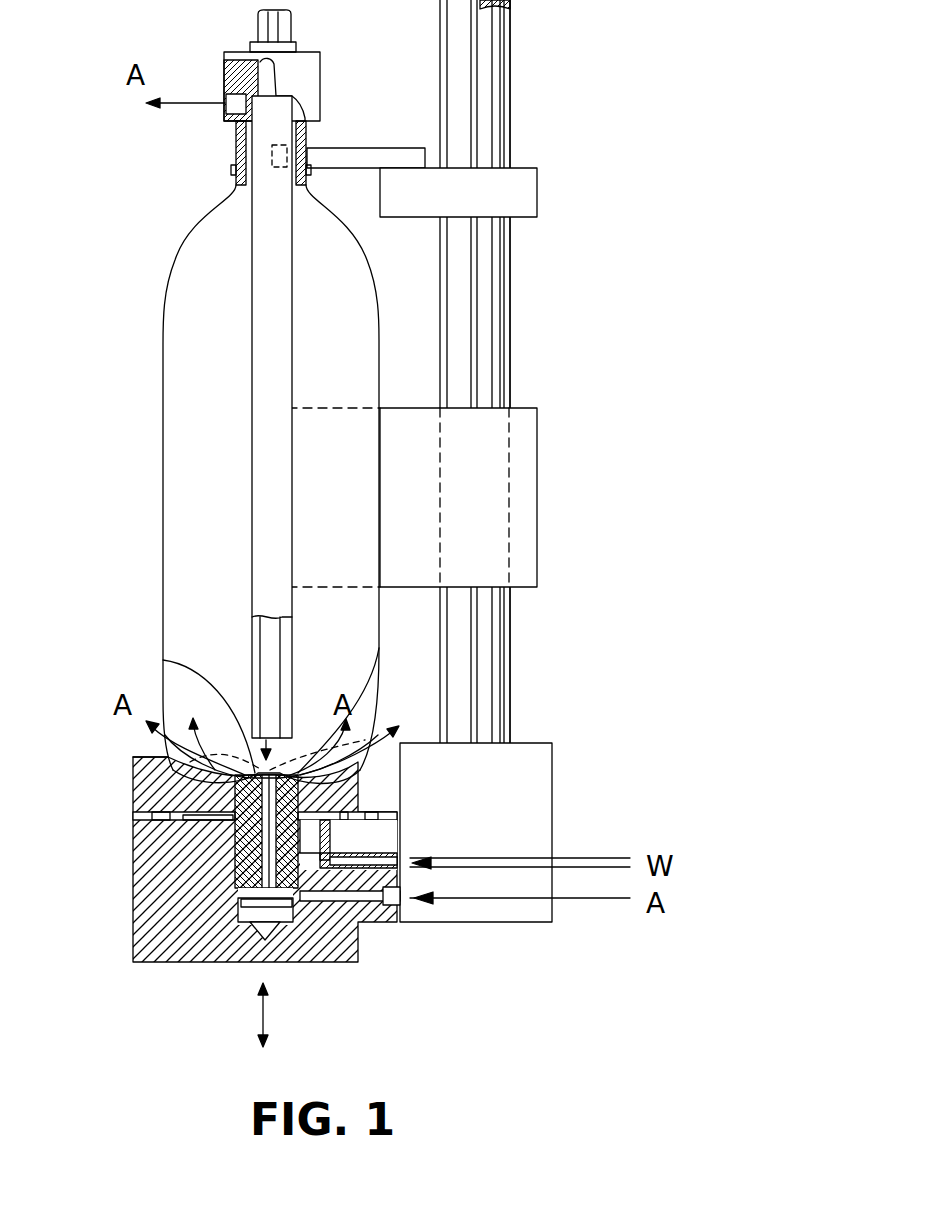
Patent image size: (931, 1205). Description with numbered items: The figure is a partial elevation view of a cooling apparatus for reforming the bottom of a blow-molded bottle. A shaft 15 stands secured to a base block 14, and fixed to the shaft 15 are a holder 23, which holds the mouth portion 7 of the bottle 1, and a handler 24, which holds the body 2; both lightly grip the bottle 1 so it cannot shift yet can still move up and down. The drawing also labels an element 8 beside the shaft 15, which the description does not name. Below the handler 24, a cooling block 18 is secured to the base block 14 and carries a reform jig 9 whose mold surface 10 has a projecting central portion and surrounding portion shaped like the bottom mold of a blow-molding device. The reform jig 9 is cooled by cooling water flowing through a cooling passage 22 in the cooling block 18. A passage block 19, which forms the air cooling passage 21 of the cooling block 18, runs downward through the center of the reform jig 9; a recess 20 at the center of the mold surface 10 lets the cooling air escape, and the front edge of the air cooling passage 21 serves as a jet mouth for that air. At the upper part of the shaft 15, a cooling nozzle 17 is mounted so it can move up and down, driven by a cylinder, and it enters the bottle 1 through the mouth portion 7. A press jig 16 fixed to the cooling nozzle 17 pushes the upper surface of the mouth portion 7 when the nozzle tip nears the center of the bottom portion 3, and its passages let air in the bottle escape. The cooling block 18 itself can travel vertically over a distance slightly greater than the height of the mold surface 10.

The bottle 1 is at (237, 484).
The body 2 is at (163, 470).
The bottom portion 3 is at (165, 660).
The mouth portion 7 is at (236, 135).
The support column 8 is at (518, 322).
The reform jig 9 is at (133, 794).
The mold surface 10 is at (168, 768).
The base block 14 is at (554, 796).
The shaft 15 is at (512, 362).
The press jig 16 is at (320, 70).
The cooling nozzle 17 is at (252, 570).
The cooling block 18 is at (133, 895).
The passage block 19 is at (320, 856).
The recess 20 is at (245, 781).
The air cooling passage 21 is at (345, 900).
The cooling passage 22 is at (340, 886).
The holder 23 is at (385, 148).
The handler 24 is at (392, 408).